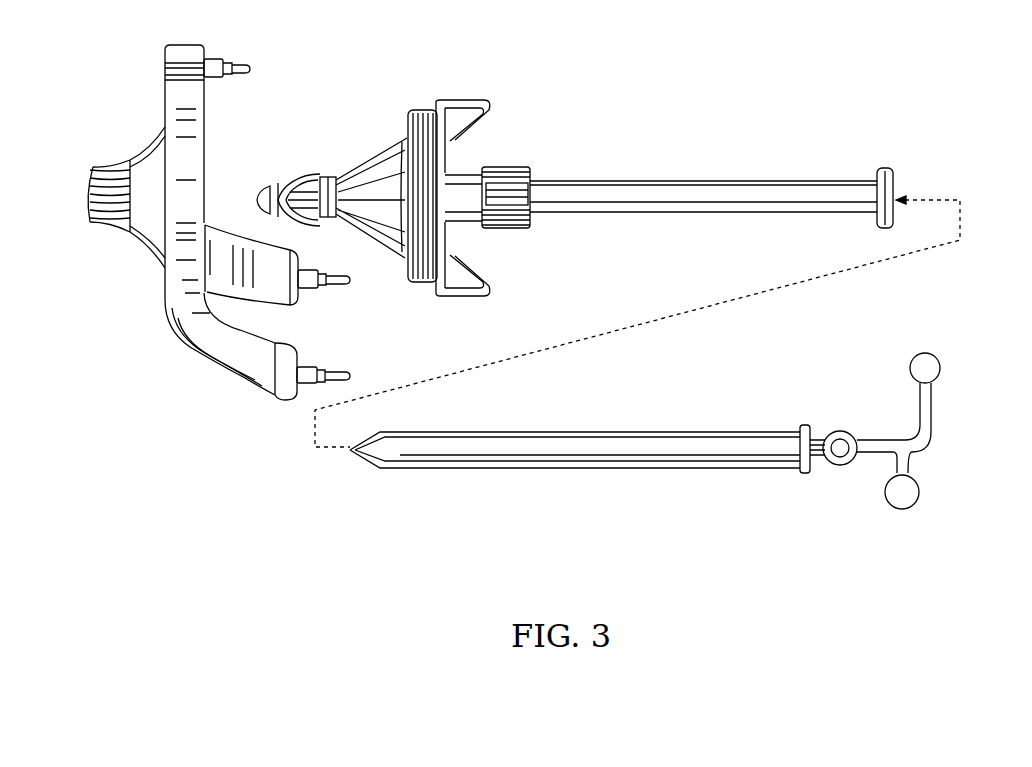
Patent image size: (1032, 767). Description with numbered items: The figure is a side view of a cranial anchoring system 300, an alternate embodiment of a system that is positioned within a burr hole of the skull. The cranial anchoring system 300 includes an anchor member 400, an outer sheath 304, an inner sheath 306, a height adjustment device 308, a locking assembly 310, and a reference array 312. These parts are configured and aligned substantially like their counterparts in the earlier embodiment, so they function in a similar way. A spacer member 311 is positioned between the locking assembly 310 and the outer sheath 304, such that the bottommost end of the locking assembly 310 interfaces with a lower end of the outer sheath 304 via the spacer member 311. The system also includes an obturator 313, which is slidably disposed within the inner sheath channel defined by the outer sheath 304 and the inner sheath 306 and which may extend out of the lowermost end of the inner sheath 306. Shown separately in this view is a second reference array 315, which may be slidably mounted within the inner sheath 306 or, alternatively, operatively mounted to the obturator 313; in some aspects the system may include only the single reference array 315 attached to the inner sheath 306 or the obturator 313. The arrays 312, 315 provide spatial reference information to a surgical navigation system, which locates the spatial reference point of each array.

The cranial anchoring system 300 is at (733, 95).
The outer sheath 304 is at (306, 174).
The inner sheath 306 is at (505, 167).
The height adjustment device 308 is at (640, 183).
The locking assembly 310 is at (392, 126).
The spacer member 311 is at (324, 177).
The reference array 312 is at (188, 46).
The obturator 313 is at (260, 195).
The second reference array 315 is at (771, 432).
The anchor member 400 is at (152, 145).